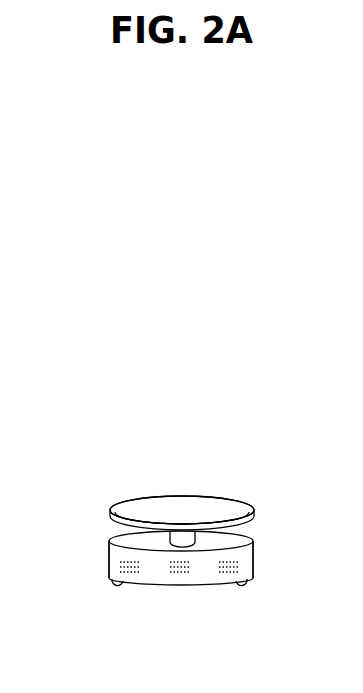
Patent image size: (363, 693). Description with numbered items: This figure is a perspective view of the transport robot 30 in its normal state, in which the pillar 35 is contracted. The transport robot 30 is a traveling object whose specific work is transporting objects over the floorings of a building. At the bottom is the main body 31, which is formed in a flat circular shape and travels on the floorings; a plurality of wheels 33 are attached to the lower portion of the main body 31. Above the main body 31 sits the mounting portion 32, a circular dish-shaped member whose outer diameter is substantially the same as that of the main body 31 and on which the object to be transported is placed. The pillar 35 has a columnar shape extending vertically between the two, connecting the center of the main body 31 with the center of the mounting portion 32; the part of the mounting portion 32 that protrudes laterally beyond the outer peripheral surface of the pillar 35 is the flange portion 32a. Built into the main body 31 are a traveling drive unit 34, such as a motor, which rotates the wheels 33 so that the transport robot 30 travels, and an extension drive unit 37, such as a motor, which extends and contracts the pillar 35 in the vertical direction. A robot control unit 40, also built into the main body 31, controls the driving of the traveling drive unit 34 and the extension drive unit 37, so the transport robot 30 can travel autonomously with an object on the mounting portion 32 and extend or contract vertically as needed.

The transport robot 30 is at (259, 497).
The main body 31 is at (256, 556).
The mounting portion 32 is at (213, 510).
The flange portion 32a is at (133, 510).
The wheels 33 is at (116, 588).
The traveling drive unit 34 is at (143, 587).
The pillar 35 is at (116, 539).
The extension drive unit 37 is at (181, 587).
The robot control unit 40 is at (221, 587).